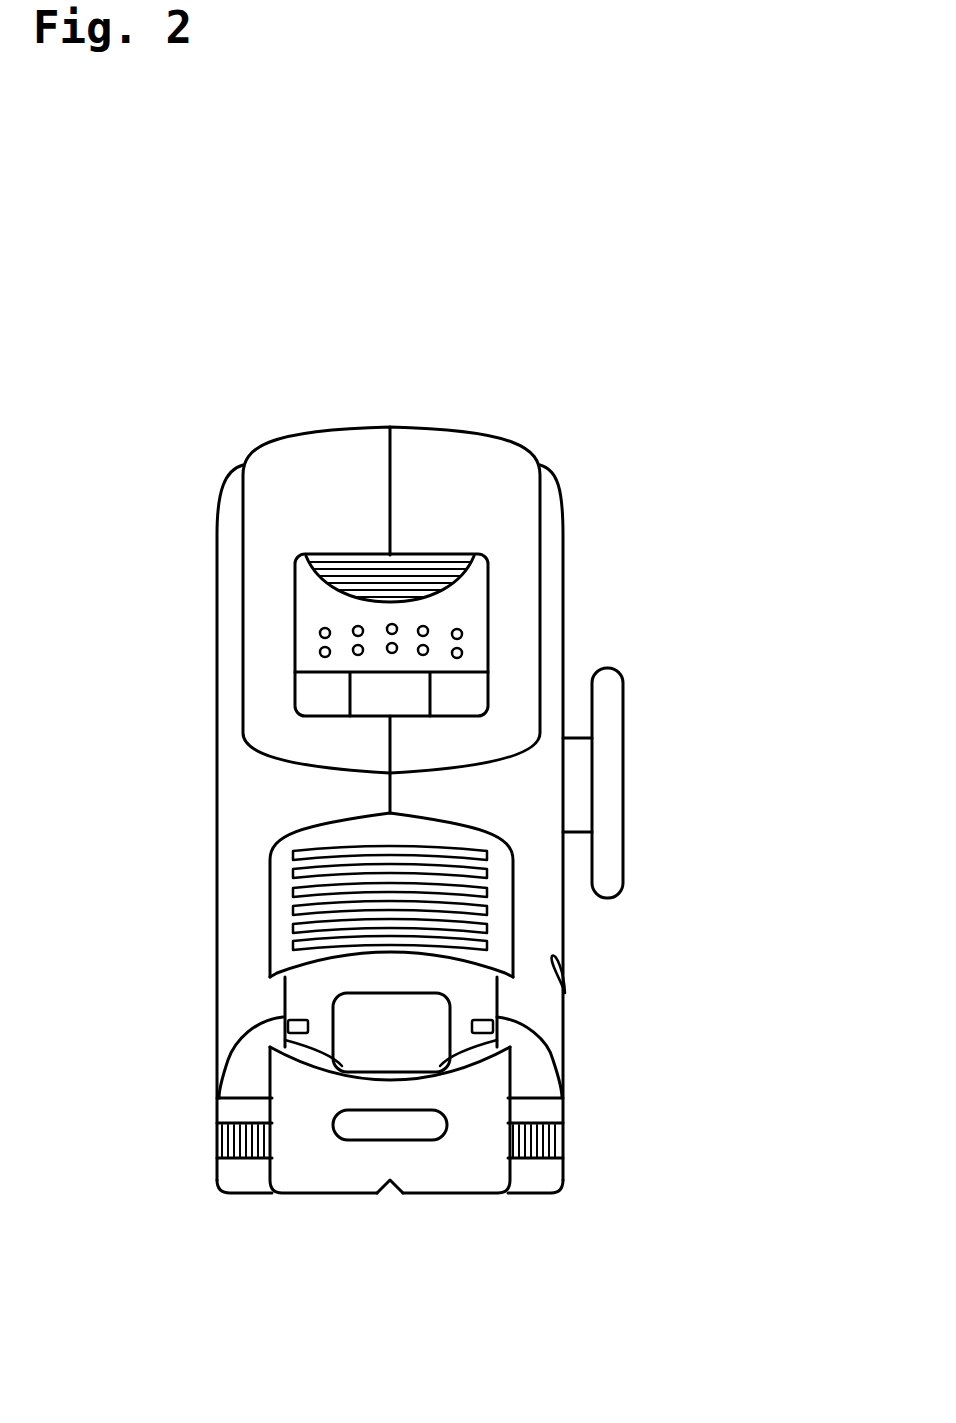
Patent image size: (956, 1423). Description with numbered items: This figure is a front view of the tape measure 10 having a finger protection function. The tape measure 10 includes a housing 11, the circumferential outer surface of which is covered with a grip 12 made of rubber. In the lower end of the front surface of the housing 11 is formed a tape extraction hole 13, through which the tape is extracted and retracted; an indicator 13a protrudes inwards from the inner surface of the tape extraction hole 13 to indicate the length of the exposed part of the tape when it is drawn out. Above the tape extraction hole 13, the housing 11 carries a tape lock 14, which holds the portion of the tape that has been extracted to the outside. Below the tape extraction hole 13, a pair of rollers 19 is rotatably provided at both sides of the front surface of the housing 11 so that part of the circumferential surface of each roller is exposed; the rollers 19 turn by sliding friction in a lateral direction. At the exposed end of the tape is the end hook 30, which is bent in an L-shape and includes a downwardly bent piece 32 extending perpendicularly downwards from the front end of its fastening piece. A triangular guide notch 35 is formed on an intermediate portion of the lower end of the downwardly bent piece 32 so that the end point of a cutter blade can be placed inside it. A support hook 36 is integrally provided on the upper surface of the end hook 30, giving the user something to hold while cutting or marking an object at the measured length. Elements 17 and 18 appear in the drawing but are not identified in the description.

The tape measure 10 is at (198, 321).
The housing 11 is at (230, 553).
The grip 12 is at (345, 458).
The tape extraction hole 13 is at (472, 1052).
The indicator 13a is at (242, 1030).
The tape lock 14 is at (310, 618).
The speaker grille 17 is at (280, 892).
The recess 18 is at (307, 992).
The rollers 19 is at (215, 1148).
The end hook 30 is at (462, 1196).
The downwardly bent piece 32 is at (327, 1160).
The triangular guide notch 35 is at (388, 1183).
The support hook 36 is at (400, 1023).